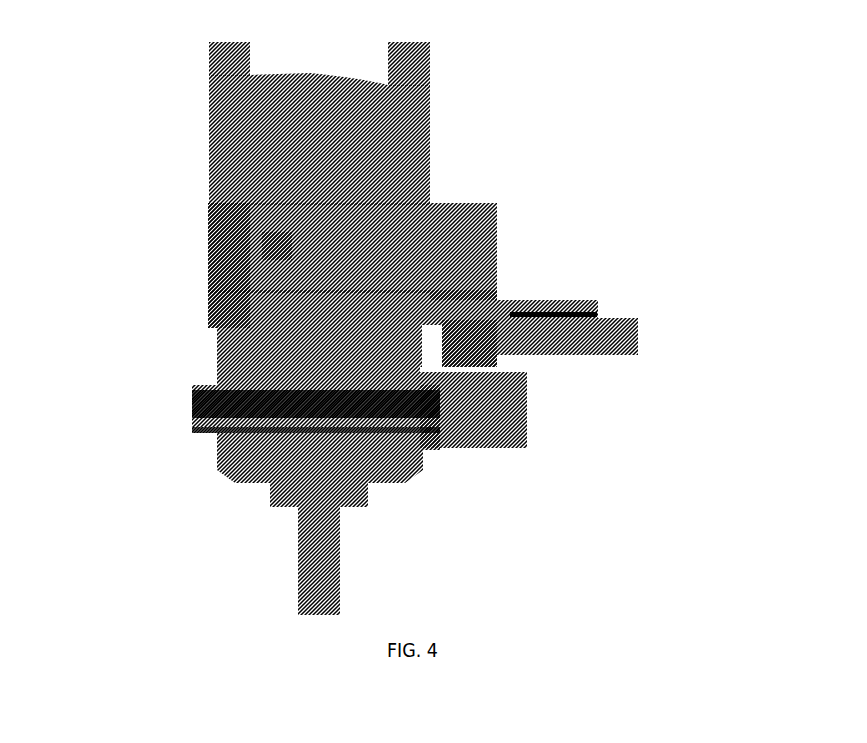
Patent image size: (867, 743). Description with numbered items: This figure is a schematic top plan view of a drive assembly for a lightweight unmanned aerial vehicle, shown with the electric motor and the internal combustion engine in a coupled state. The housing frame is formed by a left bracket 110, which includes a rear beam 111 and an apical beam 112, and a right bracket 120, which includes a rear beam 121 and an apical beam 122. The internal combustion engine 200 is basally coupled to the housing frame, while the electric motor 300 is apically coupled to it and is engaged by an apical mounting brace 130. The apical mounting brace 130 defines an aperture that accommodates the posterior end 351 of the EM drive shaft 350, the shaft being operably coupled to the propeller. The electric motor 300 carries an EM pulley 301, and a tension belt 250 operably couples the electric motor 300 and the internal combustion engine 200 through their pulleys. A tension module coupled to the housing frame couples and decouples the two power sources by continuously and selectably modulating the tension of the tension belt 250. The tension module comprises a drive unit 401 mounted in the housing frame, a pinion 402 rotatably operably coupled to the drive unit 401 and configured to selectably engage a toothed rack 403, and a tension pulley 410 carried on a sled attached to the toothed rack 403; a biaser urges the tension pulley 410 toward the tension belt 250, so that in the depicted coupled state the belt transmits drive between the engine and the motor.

The left bracket 110 is at (341, 146).
The rear beam 111 is at (430, 43).
The apical beam 112 is at (408, 135).
The right bracket 120 is at (210, 280).
The rear beam 121 is at (232, 42).
The apical beam 122 is at (217, 165).
The apical mounting brace 130 is at (210, 298).
The internal combustion engine 200 is at (318, 140).
The tension belt 250 is at (192, 403).
The electric motor 300 is at (220, 465).
The EM pulley 301 is at (197, 421).
The EM drive shaft 350 is at (298, 539).
The posterior end 351 is at (280, 252).
The drive unit 401 is at (497, 265).
The pinion 402 is at (500, 357).
The toothed rack 403 is at (605, 340).
The tension pulley 410 is at (527, 423).